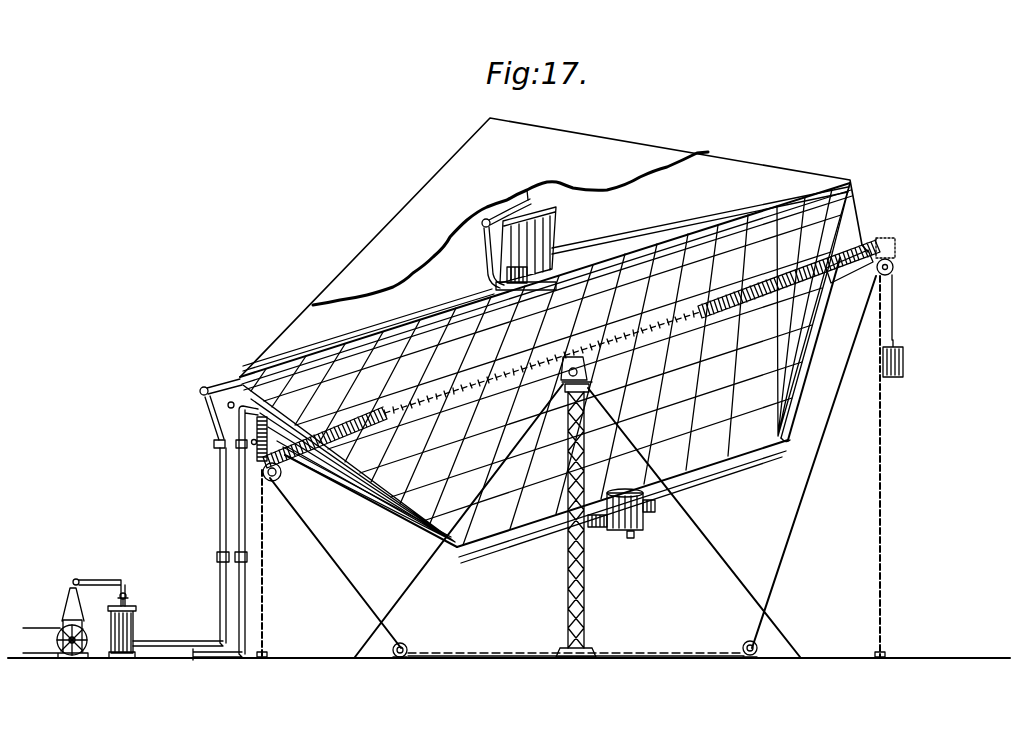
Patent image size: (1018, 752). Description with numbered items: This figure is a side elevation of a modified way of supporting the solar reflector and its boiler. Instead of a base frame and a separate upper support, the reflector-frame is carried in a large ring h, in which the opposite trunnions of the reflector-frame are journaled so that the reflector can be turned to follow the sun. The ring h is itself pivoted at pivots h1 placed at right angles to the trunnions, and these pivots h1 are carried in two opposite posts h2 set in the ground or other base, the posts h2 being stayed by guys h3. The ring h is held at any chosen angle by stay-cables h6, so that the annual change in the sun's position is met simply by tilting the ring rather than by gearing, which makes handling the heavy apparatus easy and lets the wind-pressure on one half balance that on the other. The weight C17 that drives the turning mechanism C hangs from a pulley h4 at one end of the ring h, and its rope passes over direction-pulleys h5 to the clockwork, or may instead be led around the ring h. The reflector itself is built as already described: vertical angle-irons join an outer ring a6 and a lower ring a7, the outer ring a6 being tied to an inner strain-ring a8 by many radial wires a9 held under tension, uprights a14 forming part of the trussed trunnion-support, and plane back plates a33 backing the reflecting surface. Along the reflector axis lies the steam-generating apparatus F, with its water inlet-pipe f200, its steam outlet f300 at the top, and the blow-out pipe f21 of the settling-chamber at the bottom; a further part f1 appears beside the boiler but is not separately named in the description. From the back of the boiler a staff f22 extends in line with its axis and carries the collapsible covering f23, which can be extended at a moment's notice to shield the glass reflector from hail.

The collapsible covering f23 is at (503, 178).
The staff f22 is at (545, 200).
The steam-generating apparatus F is at (550, 230).
The inner strain-ring a8 is at (565, 252).
The wires a9 is at (633, 238).
The outer ring a6 is at (707, 222).
The ring h is at (531, 364).
The pulley h4 is at (894, 262).
The weight C17 is at (904, 357).
The uprights a14 is at (832, 333).
The back plates a33 is at (803, 372).
The stay-cables h6 is at (263, 571).
The lower ring a7 is at (756, 452).
The pivots h1 is at (589, 367).
The posts h2 is at (588, 566).
The guys h3 is at (430, 567).
The direction-pulleys h5 is at (405, 641).
The blow-out pipe f21 is at (632, 542).
The pipe f1 is at (500, 248).
The outlet f300 is at (219, 380).
The inlet-pipe f200 is at (231, 420).
The turning mechanism C is at (214, 445).